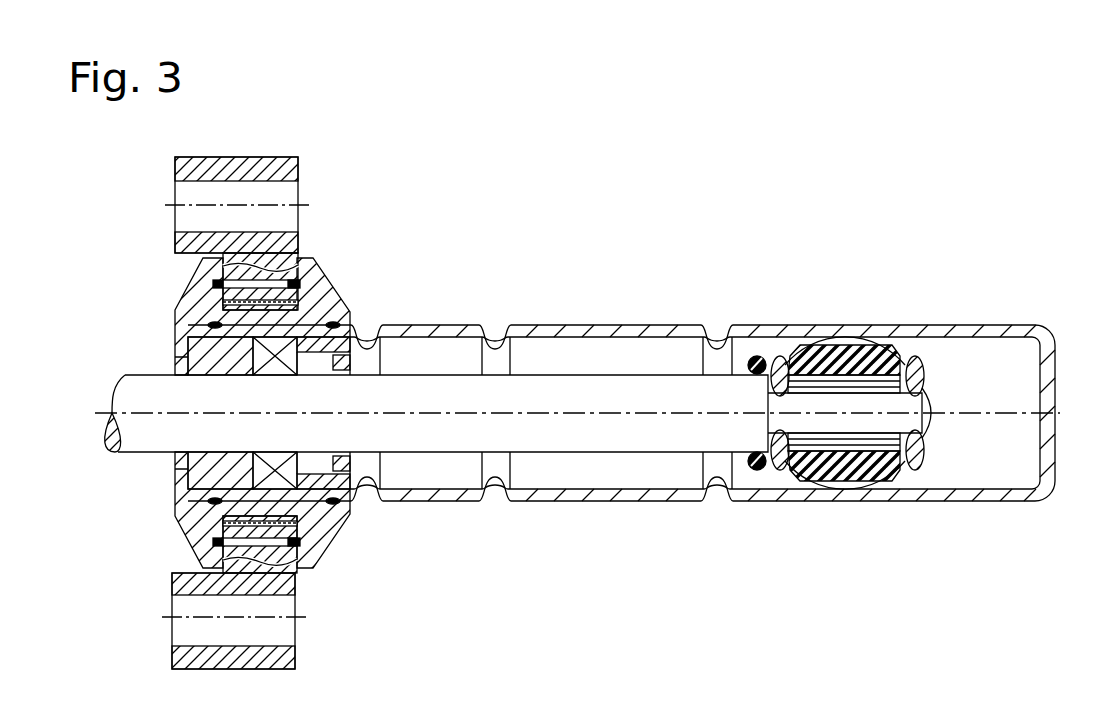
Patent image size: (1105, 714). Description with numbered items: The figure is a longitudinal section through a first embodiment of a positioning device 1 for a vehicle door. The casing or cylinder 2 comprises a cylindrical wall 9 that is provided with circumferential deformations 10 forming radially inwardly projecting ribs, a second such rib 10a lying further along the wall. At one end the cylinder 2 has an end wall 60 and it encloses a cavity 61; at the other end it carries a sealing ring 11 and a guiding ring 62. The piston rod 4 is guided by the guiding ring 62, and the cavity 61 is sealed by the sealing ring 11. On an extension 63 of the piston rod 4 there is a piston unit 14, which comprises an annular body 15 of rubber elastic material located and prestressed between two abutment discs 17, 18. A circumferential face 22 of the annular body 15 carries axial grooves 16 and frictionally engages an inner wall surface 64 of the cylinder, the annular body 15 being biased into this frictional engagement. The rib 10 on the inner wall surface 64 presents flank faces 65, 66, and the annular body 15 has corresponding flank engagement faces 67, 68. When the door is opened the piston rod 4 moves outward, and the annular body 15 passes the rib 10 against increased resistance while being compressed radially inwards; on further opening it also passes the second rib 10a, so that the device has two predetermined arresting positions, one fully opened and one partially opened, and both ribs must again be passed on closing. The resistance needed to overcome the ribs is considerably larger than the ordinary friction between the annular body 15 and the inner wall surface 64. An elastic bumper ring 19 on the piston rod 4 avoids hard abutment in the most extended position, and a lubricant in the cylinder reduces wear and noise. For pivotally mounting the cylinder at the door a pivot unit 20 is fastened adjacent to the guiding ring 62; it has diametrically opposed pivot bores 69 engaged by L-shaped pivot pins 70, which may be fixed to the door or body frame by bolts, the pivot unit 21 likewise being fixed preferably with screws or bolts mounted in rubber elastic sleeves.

The intermediate bearing unit 1 is at (866, 324).
The cylinder 2 is at (408, 322).
The piston rod 4 is at (137, 393).
The cylindrical wall 9 is at (604, 326).
The circumferential deformation 10 is at (727, 335).
The second rib 10a is at (495, 325).
The sealing ring 11 is at (295, 327).
The piston unit 14 is at (912, 470).
The annular body 15 is at (860, 470).
The axial grooves 16 is at (838, 345).
The abutment disc 17 is at (918, 362).
The abutment disc 18 is at (760, 356).
The elastic bumper ring 19 is at (760, 470).
The pivot unit 20 is at (322, 517).
The pivot unit 21 is at (283, 660).
The circumferential face 22 is at (835, 483).
The end wall 60 is at (1045, 405).
The cavity 61 is at (632, 347).
The guiding ring 62 is at (203, 350).
The extension 63 is at (928, 425).
The inner wall surface 64 is at (980, 338).
The flank face 65 is at (698, 346).
The flank face 66 is at (740, 347).
The flank engagement face 67 is at (786, 356).
The flank engagement face 68 is at (897, 340).
The pivot bore 69 is at (318, 264).
The L-shaped pivot pin 70 is at (272, 246).